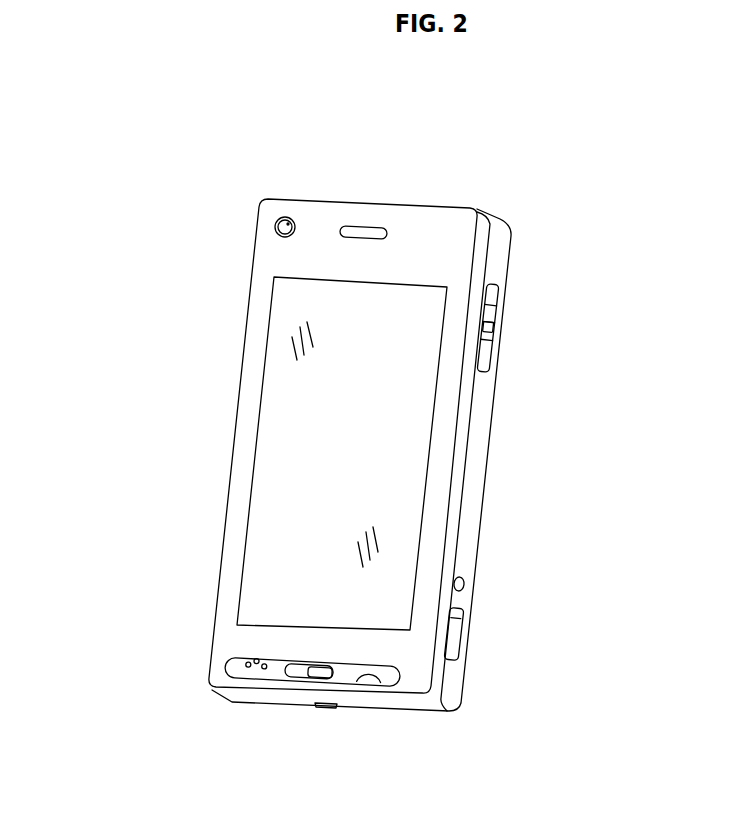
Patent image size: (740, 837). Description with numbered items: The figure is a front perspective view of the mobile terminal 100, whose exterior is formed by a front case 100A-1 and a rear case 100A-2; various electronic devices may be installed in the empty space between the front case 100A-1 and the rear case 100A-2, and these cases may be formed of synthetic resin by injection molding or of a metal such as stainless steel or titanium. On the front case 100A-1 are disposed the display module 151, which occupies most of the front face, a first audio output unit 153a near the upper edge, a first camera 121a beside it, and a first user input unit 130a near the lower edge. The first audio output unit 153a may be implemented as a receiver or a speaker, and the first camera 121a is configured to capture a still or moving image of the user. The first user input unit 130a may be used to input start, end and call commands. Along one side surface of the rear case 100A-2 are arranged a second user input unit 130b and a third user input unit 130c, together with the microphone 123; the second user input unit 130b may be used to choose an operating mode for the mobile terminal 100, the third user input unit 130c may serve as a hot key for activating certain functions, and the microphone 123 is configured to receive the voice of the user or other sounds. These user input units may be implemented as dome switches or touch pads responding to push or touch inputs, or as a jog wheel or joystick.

The mobile terminal 100 is at (186, 205).
The front case 100A-1 is at (482, 211).
The rear case 100A-2 is at (498, 247).
The first camera 121a is at (280, 216).
The first audio output unit 153a is at (363, 230).
The display module 151 is at (277, 440).
The second user input unit 130b is at (491, 322).
The third user input unit 130c is at (461, 631).
The first user input unit 130a is at (250, 657).
The microphone 123 is at (328, 708).